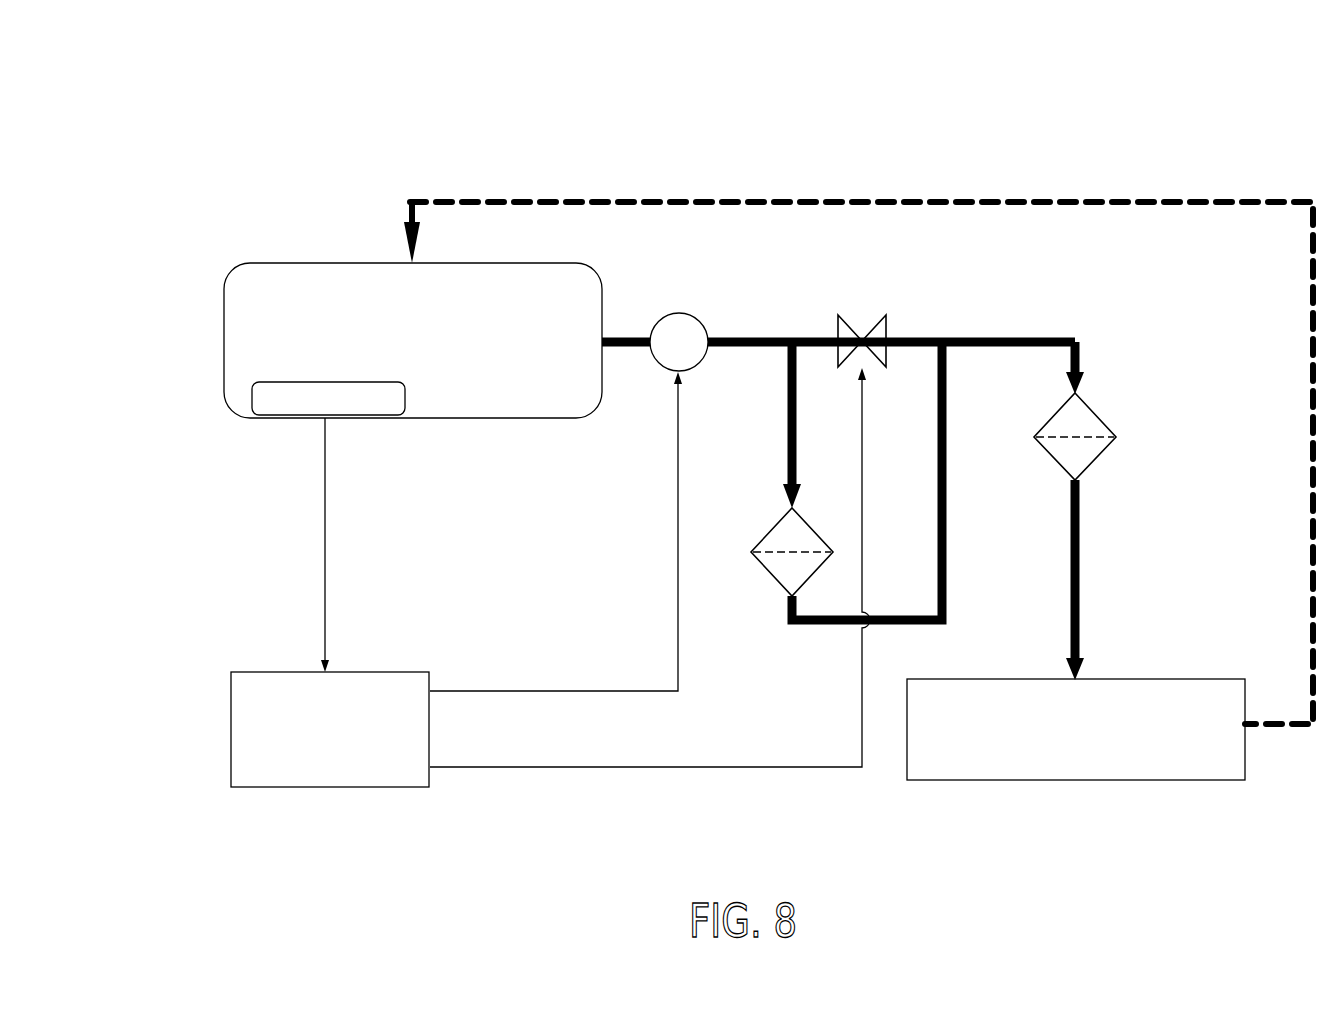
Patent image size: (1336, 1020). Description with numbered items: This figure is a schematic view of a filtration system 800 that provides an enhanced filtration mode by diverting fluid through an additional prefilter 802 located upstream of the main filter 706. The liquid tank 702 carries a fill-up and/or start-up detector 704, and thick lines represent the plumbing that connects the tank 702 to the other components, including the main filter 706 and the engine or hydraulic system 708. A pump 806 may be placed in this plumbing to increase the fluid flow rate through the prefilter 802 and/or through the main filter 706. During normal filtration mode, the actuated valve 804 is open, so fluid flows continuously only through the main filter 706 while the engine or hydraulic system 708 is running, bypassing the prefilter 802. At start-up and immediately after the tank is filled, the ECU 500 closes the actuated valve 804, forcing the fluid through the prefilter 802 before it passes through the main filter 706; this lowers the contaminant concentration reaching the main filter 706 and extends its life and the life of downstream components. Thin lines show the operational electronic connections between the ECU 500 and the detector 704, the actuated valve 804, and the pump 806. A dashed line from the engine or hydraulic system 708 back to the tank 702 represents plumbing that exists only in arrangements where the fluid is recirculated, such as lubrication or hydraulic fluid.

The filtration system 800 is at (390, 106).
The liquid tank 702 is at (278, 263).
The fill-up and/or start-up detector 704 is at (279, 418).
The pump 806 is at (665, 313).
The actuated valve 804 is at (860, 313).
The prefilter 802 is at (770, 532).
The main filter 706 is at (1100, 414).
The engine or hydraulic system 708 is at (991, 679).
The ECU 500 is at (231, 738).